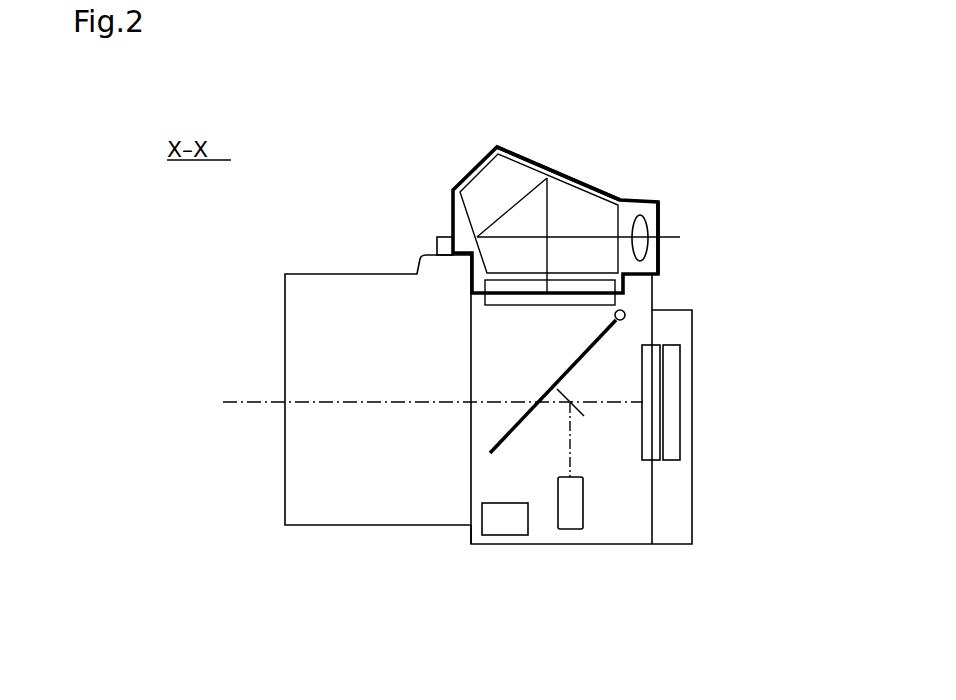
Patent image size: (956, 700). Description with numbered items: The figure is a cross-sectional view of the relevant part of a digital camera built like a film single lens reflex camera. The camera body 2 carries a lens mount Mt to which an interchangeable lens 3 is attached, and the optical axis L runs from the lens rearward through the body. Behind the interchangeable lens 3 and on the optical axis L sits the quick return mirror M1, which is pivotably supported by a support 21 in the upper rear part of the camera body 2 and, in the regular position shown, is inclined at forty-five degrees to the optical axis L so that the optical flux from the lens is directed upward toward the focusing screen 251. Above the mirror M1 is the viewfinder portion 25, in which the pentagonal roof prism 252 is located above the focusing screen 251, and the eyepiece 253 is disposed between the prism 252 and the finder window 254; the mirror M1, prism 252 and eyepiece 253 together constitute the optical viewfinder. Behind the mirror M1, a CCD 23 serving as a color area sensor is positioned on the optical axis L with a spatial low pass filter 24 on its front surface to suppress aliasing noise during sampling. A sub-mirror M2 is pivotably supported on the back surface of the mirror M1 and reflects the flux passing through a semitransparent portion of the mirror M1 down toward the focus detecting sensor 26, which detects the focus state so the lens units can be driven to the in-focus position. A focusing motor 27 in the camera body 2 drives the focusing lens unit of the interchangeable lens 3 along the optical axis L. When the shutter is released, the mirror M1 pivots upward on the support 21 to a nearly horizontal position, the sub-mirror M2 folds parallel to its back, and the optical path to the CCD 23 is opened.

The camera body 2 is at (660, 560).
The interchangeable lens 3 is at (383, 250).
The support 21 is at (626, 311).
The CCD 23 is at (680, 403).
The spatial low pass filter 24 is at (657, 462).
The viewfinder portion 25 is at (618, 160).
The focusing screen 251 is at (480, 324).
The pentagonal roof prism 252 is at (527, 156).
The eyepiece 253 is at (646, 216).
The finder window 254 is at (684, 261).
The focus detecting sensor 26 is at (583, 508).
The focusing motor 27 is at (504, 537).
The quick return mirror M1 is at (558, 378).
The sub-mirror M2 is at (563, 392).
The lens mount Mt is at (461, 543).
The optical axis L is at (243, 401).